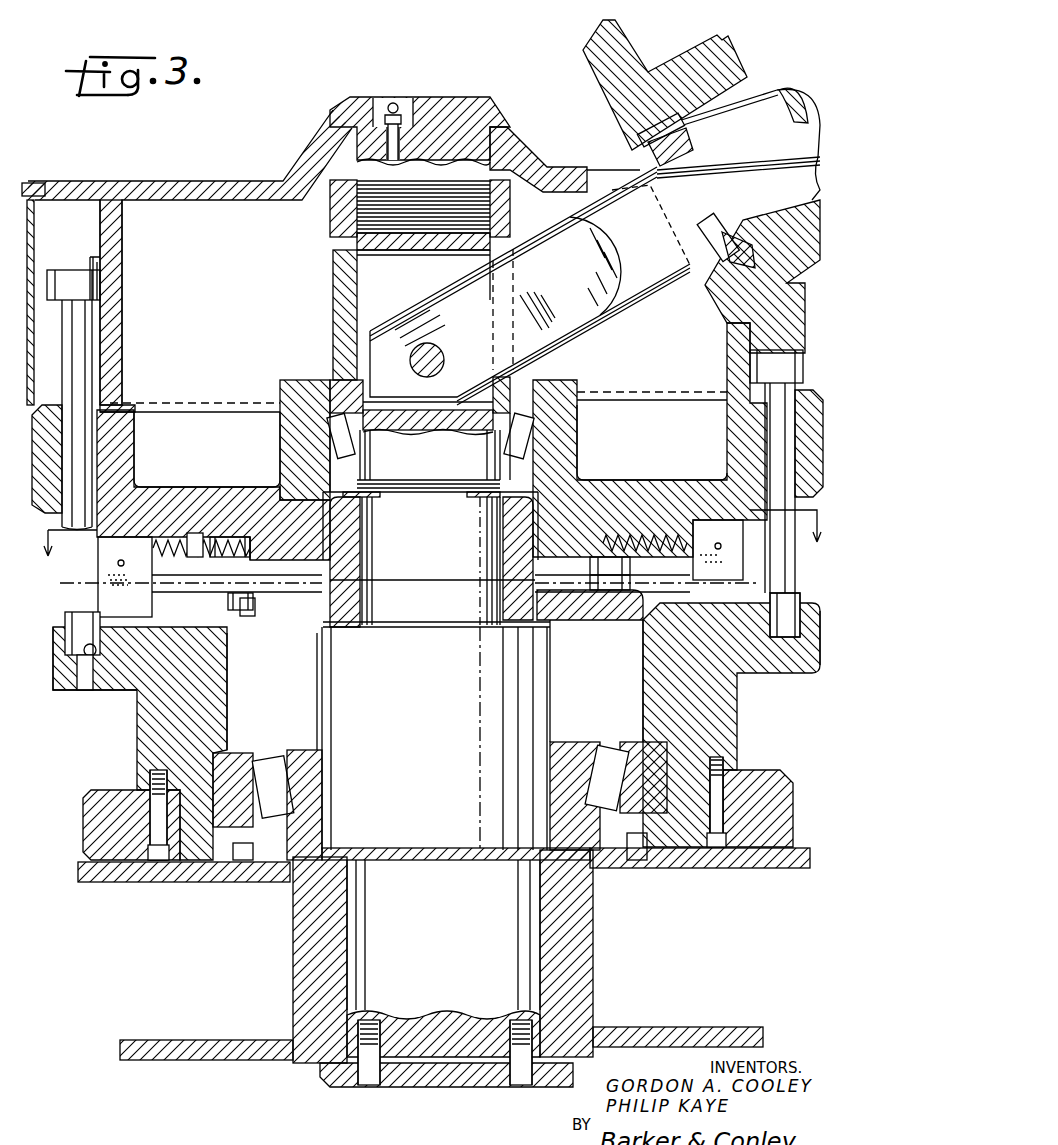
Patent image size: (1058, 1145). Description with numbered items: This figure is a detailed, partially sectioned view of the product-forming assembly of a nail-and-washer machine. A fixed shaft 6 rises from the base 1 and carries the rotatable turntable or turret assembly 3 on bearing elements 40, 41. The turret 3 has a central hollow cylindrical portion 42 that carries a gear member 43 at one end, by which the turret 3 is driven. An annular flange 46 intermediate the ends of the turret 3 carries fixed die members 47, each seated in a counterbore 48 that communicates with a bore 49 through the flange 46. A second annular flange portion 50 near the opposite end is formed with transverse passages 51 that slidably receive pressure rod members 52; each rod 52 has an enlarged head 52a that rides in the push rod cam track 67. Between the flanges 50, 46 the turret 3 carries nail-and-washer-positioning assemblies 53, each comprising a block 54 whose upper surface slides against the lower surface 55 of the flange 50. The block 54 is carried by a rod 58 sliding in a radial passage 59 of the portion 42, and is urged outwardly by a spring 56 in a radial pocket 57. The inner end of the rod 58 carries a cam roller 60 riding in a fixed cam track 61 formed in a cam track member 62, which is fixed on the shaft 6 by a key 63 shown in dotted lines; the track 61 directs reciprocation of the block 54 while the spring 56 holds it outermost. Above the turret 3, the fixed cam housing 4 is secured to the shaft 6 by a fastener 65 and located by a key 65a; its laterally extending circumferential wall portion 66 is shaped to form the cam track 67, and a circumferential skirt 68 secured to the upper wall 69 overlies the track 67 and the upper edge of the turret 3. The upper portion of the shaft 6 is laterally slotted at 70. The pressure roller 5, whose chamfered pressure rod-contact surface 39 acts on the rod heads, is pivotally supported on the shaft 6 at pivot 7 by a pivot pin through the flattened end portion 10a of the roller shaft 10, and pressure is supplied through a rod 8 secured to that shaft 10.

The base 1 is at (119, 893).
The product-forming turntable assembly 3 is at (280, 397).
The fixed cam housing 4 is at (85, 181).
The pressure roller 5 is at (684, 48).
The fixed shaft 6 is at (443, 720).
The pivot 7 is at (443, 356).
The rod 8 is at (428, 553).
The roller shaft 10 is at (774, 92).
The flattened end portion 10a is at (560, 328).
The pressure rod-contact surface 39 is at (583, 58).
The bearing element 40 is at (605, 742).
The bearing element 41 is at (530, 418).
The central hollow cylindrical portion 42 is at (222, 703).
The gear member 43 is at (115, 790).
The annular flange 46 is at (58, 690).
The fixed die member 47 is at (66, 616).
The counterbore 48 is at (96, 652).
The bore 49 is at (84, 690).
The second annular flange portion 50 is at (125, 456).
The transverse passage 51 is at (83, 474).
The pressure rod member 52 is at (92, 357).
The head 52a is at (100, 300).
The nail-and-washer-positioning assembly 53 is at (162, 620).
The block 54 is at (130, 540).
The lower surface 55 is at (153, 537).
The spring 56 is at (250, 546).
The pocket 57 is at (212, 540).
The rod 58 is at (172, 630).
The passage 59 is at (172, 593).
The cam roller 60 is at (240, 610).
The fixed cam track 61 is at (255, 612).
The cam track member 62 is at (563, 617).
The key 63 is at (543, 527).
The fastener 65 is at (440, 98).
The key 65a is at (512, 137).
The circumferential wall portion 66 is at (122, 236).
The push rod cam track 67 is at (87, 277).
The circumferential skirt 68 is at (34, 236).
The upper wall 69 is at (193, 181).
The lateral slot 70 is at (404, 294).